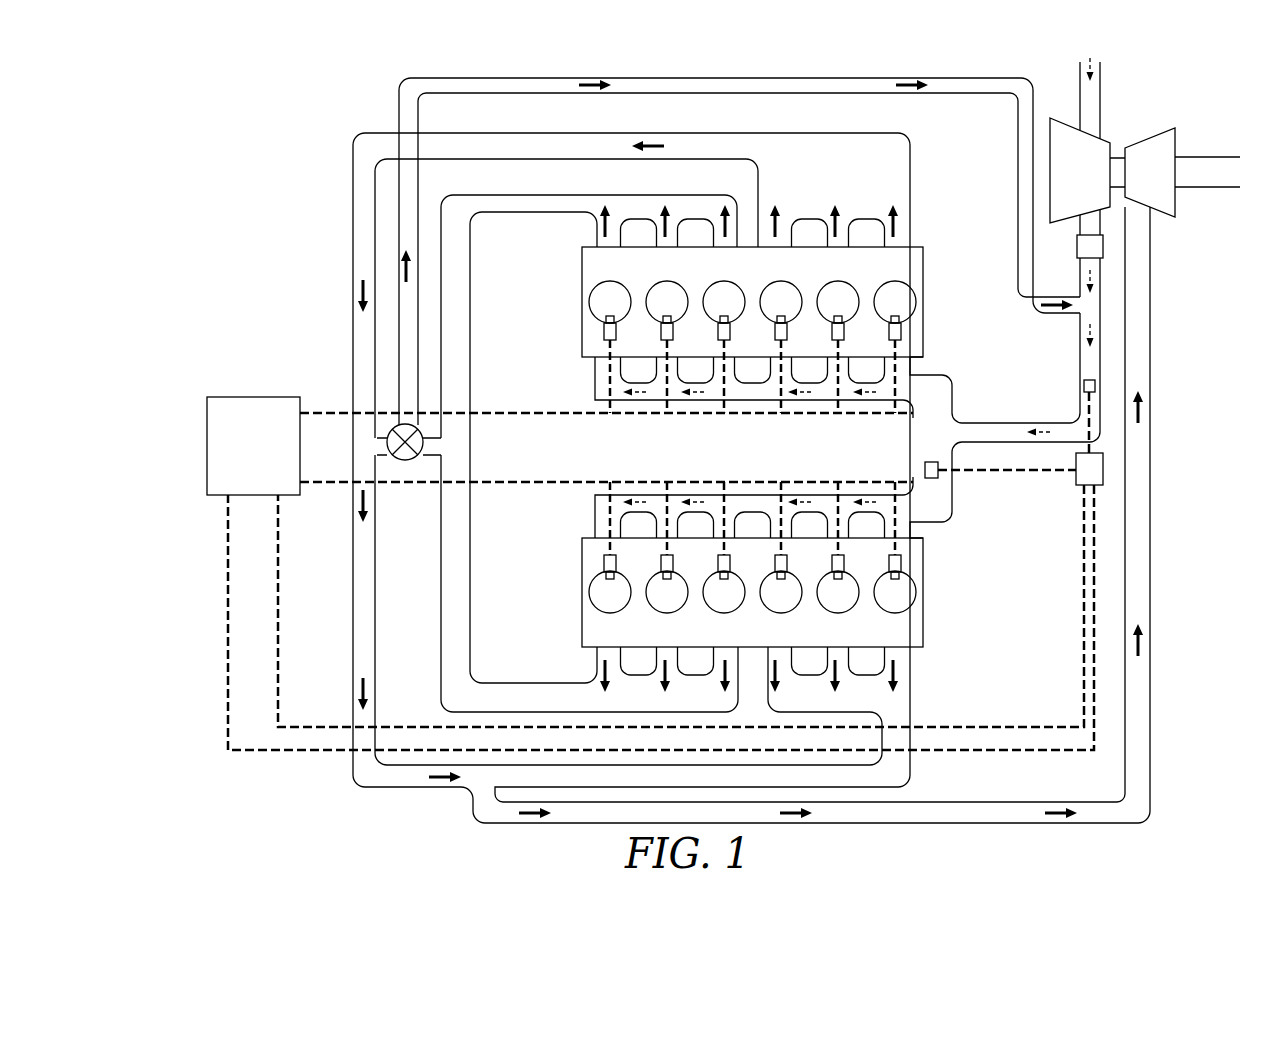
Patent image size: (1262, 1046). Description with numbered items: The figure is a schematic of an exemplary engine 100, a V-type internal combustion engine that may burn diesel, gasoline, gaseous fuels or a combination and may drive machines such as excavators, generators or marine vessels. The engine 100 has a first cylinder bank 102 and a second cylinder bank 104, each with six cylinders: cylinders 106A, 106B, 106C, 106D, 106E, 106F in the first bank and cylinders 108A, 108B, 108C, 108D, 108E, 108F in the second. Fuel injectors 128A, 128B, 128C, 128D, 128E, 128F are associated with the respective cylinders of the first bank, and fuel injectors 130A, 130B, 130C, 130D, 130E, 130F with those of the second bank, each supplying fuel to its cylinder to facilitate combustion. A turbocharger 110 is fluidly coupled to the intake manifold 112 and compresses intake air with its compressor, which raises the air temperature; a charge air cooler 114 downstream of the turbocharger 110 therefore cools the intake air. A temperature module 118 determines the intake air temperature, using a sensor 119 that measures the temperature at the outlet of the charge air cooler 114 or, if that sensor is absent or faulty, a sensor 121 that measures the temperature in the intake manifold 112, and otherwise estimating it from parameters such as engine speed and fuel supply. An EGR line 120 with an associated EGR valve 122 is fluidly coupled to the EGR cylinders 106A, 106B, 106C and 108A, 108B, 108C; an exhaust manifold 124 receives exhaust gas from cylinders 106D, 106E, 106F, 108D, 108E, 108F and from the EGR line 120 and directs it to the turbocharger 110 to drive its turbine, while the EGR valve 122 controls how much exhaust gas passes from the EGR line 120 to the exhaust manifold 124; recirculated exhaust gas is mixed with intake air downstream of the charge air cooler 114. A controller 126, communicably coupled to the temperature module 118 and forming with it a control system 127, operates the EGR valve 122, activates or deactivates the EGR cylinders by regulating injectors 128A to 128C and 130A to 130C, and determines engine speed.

The engine 100 is at (207, 174).
The first cylinder bank 102 is at (553, 272).
The second cylinder bank 104 is at (956, 532).
The cylinder 106A is at (632, 285).
The cylinder 106B is at (689, 285).
The cylinder 106C is at (746, 285).
The cylinder 106D is at (803, 285).
The cylinder 106E is at (860, 285).
The cylinder 106F is at (917, 285).
The cylinder 108A is at (597, 610).
The cylinder 108B is at (654, 610).
The cylinder 108C is at (711, 610).
The cylinder 108D is at (768, 610).
The cylinder 108E is at (825, 610).
The cylinder 108F is at (916, 594).
The turbocharger 110 is at (1181, 105).
The intake manifold 112 is at (955, 400).
The charge air cooler 114 is at (1103, 246).
The temperature module 118 is at (1103, 476).
The sensor 119 is at (1095, 386).
The EGR line 120 is at (471, 515).
The sensor 121 is at (932, 462).
The EGR valve 122 is at (423, 446).
The exhaust manifold 124 is at (353, 200).
The controller 126 is at (268, 456).
The control system 127 is at (196, 384).
The fuel injector 128A is at (609, 333).
The fuel injector 128B is at (666, 333).
The fuel injector 128C is at (723, 333).
The fuel injector 128D is at (780, 333).
The fuel injector 128E is at (837, 333).
The fuel injector 128F is at (894, 333).
The fuel injector 130A is at (609, 560).
The fuel injector 130B is at (666, 560).
The fuel injector 130C is at (723, 560).
The fuel injector 130D is at (780, 560).
The fuel injector 130E is at (837, 560).
The fuel injector 130F is at (894, 560).